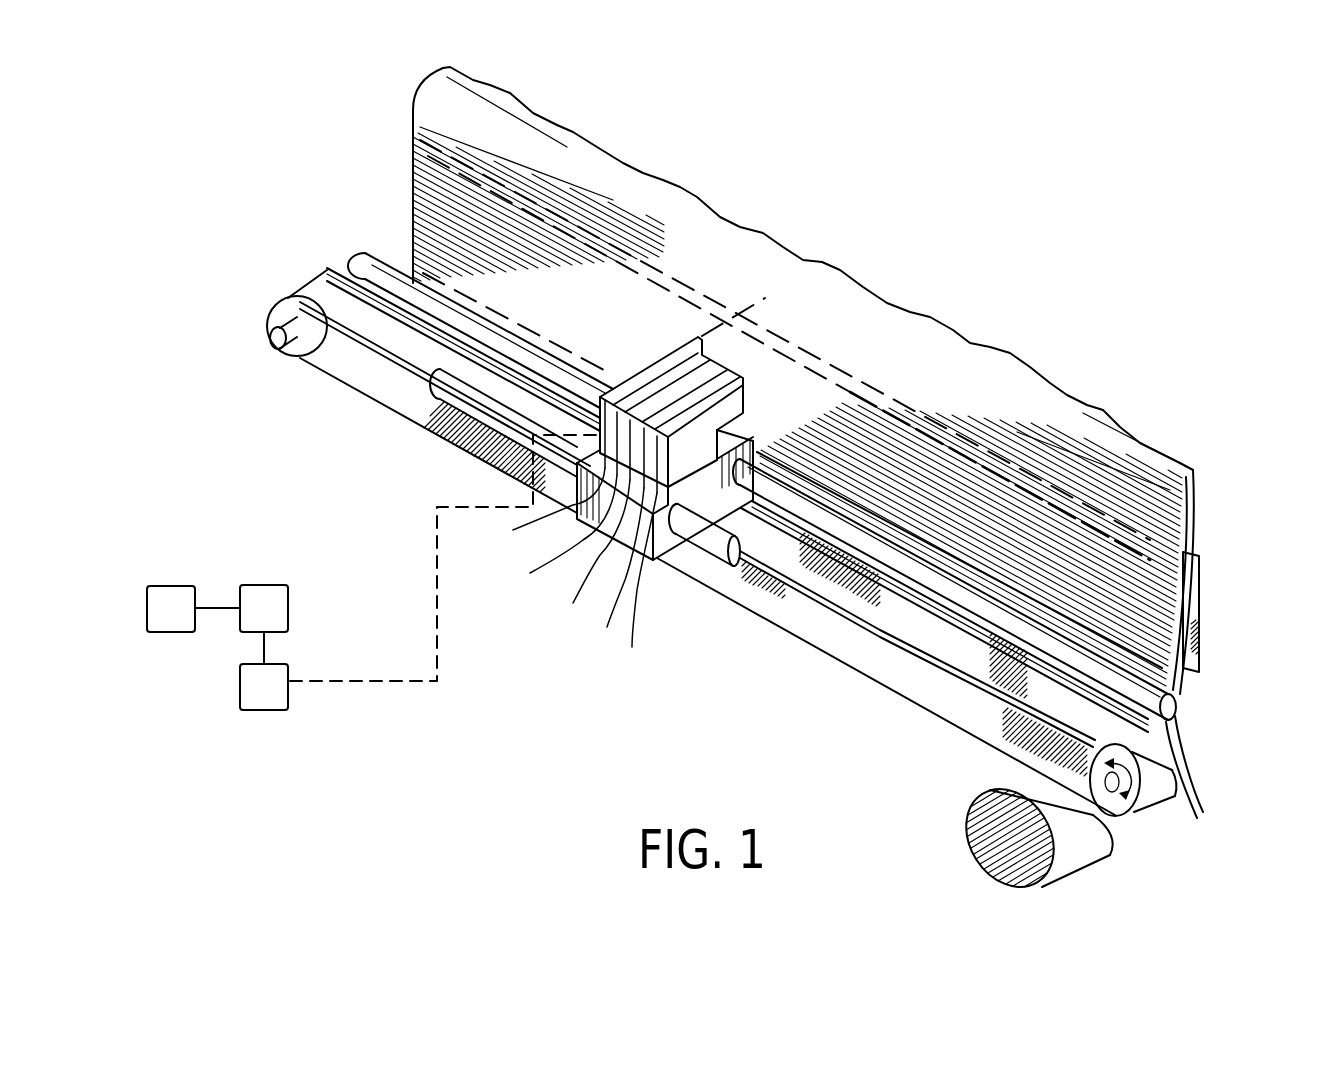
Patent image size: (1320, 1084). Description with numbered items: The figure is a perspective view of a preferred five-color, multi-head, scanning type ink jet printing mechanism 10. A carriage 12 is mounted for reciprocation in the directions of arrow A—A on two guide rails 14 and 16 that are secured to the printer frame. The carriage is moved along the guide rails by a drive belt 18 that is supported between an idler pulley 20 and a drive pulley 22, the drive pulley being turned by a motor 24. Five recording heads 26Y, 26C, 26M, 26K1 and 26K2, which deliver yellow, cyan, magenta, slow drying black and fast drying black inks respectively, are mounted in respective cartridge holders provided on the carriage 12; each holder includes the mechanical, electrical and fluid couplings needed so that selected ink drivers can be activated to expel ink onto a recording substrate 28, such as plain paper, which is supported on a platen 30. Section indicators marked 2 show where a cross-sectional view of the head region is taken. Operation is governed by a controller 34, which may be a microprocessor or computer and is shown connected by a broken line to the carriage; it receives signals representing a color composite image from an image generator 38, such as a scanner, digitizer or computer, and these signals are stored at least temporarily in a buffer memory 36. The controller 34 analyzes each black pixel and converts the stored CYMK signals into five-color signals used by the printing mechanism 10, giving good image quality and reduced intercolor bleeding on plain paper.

The printing mechanism 10 is at (385, 464).
The carriage 12 is at (576, 496).
The guide rail 14 is at (423, 425).
The guide rail 16 is at (377, 249).
The drive belt 18 is at (990, 693).
The idler pulley 20 is at (274, 305).
The drive pulley 22 is at (1123, 806).
The motor 24 is at (1077, 850).
The recording head 26K1 is at (525, 510).
The recording head 26K2 is at (539, 534).
The recording head 26M is at (573, 552).
The recording head 26C is at (603, 574).
The recording head 26Y is at (628, 589).
The recording substrate 28 is at (1147, 508).
The platen 30 is at (1200, 606).
The controller 34 is at (280, 705).
The buffer memory 36 is at (280, 626).
The image generator 38 is at (187, 626).
The section line for FIG. 2 is at (672, 320).
The direction of carriage reciprocation A is at (830, 697).